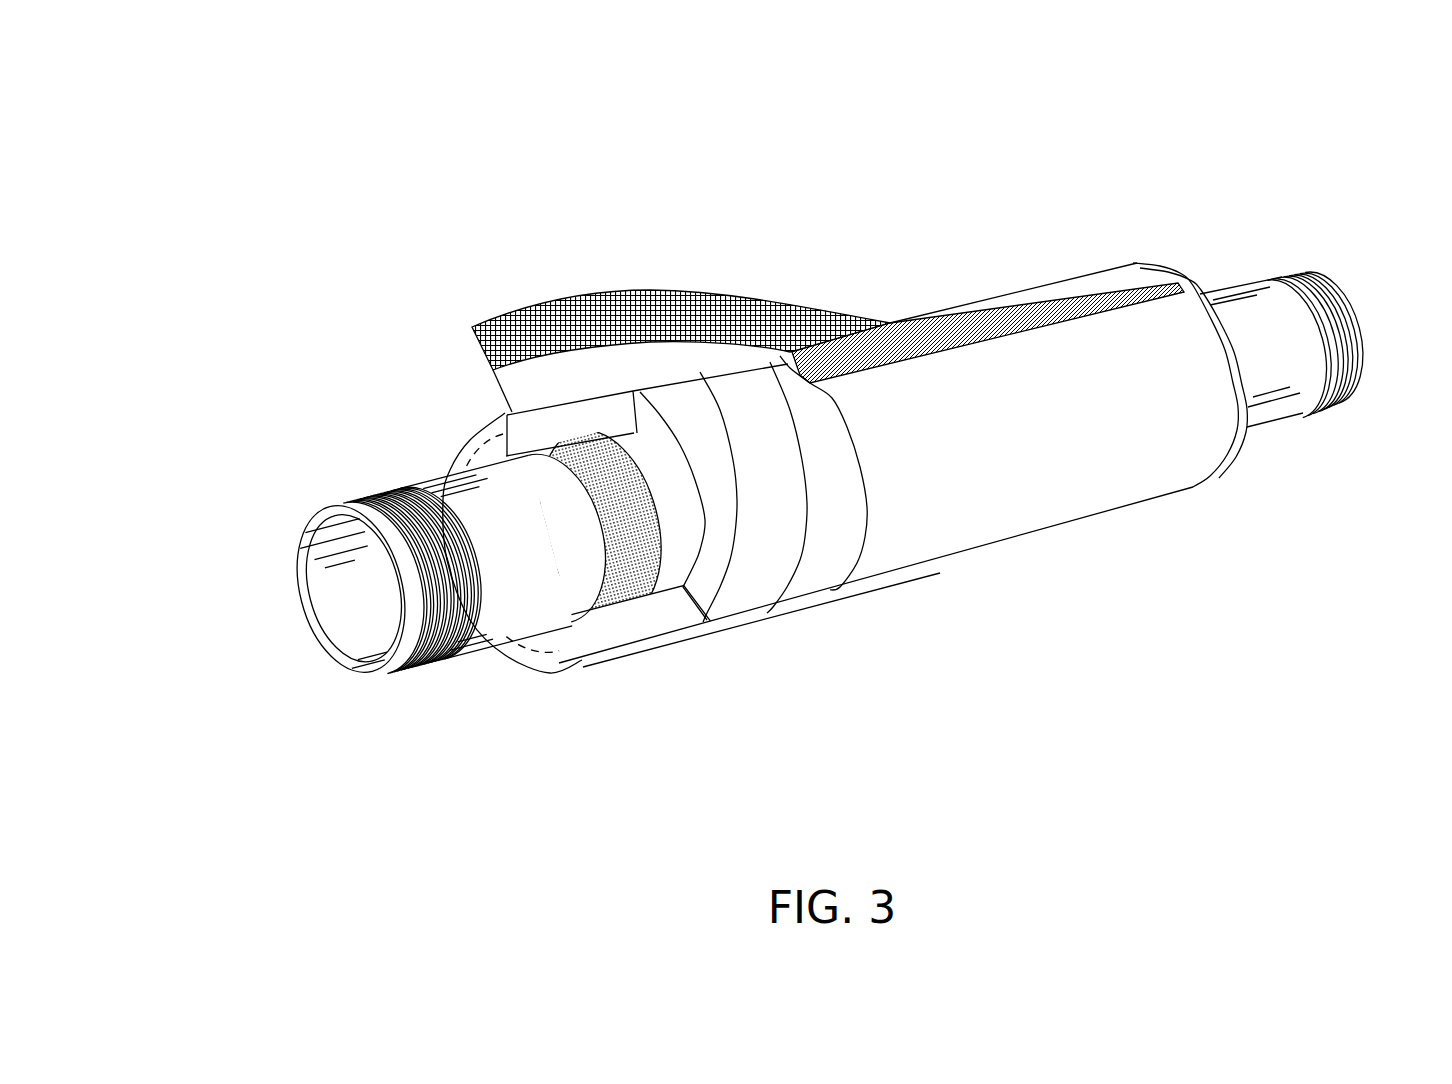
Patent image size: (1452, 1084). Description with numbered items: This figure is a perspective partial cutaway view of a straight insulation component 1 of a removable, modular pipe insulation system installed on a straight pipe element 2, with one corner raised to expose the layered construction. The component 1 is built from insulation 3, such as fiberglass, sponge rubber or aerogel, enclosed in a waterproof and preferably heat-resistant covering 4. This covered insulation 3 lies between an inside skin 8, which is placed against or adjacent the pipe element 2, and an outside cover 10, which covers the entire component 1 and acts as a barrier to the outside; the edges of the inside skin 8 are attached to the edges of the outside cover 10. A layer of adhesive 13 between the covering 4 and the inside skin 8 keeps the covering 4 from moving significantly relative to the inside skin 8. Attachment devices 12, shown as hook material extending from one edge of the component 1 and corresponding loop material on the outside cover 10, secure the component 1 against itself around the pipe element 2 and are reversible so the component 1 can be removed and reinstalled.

The component 1 is at (1130, 468).
The pipe element 2 is at (385, 495).
The insulation 3 is at (765, 563).
The covering 4 is at (680, 547).
The inside skin 8 is at (608, 547).
The outside cover 10 is at (967, 523).
The attachment device 12 is at (537, 325).
The layer of adhesive 13 is at (612, 543).